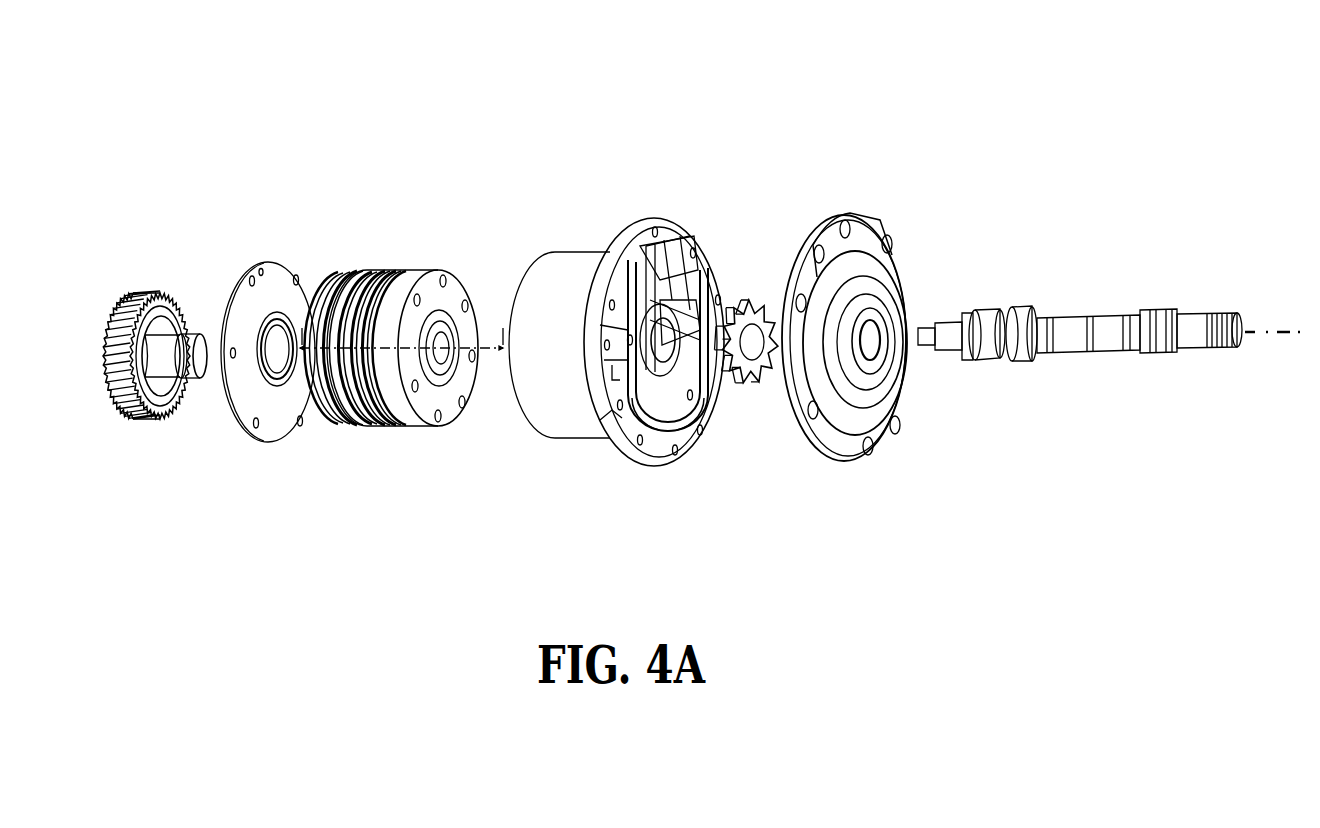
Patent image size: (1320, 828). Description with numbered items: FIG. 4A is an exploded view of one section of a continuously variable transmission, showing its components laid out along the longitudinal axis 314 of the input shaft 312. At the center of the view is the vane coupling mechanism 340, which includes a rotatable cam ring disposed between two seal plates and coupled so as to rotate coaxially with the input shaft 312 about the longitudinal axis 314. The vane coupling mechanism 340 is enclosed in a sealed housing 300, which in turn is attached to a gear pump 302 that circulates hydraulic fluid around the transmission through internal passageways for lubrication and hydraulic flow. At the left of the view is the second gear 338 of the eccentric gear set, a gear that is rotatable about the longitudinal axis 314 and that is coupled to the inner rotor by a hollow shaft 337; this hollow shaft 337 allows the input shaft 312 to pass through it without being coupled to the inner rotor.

The sealed housing 300 is at (415, 328).
The gear pump 302 is at (912, 207).
The input shaft 312 is at (1193, 362).
The longitudinal axis 314 is at (1274, 326).
The hollow shaft 337 is at (165, 345).
The second gear 338 is at (140, 292).
The vane coupling mechanism 340 is at (404, 438).